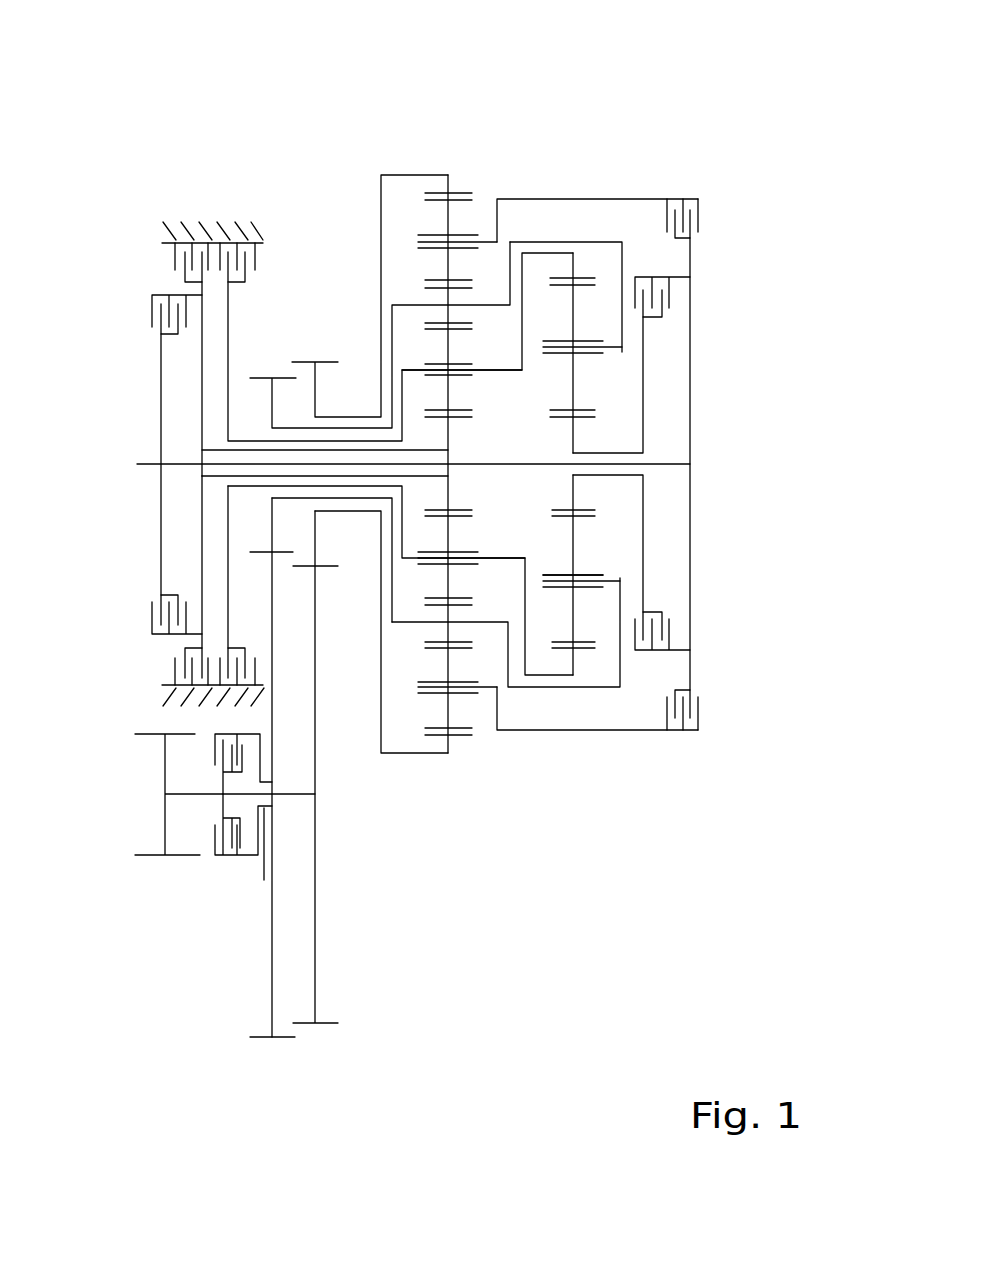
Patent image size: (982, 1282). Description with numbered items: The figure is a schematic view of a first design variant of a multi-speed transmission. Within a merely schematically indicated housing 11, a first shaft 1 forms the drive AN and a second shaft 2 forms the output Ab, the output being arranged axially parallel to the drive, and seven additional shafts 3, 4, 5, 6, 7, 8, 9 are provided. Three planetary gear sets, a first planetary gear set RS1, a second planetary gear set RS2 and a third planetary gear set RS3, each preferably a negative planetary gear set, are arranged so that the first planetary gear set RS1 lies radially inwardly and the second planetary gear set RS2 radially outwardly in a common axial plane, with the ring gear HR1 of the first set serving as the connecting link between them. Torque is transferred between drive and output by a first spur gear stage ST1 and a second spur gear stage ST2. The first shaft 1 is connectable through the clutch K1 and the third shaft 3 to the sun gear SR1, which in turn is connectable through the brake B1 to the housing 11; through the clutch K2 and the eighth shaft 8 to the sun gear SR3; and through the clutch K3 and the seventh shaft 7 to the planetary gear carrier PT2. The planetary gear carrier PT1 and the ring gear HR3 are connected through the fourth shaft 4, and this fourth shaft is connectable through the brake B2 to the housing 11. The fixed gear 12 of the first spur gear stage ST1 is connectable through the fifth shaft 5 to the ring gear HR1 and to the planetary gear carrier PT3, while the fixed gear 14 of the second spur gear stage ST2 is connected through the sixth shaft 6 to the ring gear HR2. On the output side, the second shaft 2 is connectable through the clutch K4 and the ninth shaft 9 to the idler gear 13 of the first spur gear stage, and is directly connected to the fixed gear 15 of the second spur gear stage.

The drive AN is at (138, 463).
The output Ab is at (165, 780).
The first shaft 1 is at (160, 467).
The second shaft 2 is at (188, 795).
The third shaft 3 is at (250, 553).
The fourth shaft 4 is at (262, 440).
The fifth shaft 5 is at (152, 600).
The sixth shaft 6 is at (185, 647).
The seventh shaft 7 is at (578, 245).
The eighth shaft 8 is at (570, 388).
The ninth shaft 9 is at (262, 866).
The housing 11 is at (170, 222).
The fixed gear 12 is at (258, 377).
The idler gear 13 is at (293, 1038).
The fixed gear 14 is at (336, 365).
The fixed gear 15 is at (340, 1024).
The fifth shifting element B1 is at (175, 262).
The sixth shifting element B2 is at (262, 240).
The first shifting element K1 is at (146, 304).
The second shifting element K2 is at (674, 267).
The third shifting element K3 is at (684, 188).
The fourth shifting element K4 is at (228, 872).
The first spur gear stage ST1 is at (272, 372).
The second spur gear stage ST2 is at (315, 356).
The first planetary gear set RS1 is at (388, 173).
The second planetary gear set RS2 is at (448, 168).
The third planetary gear set RS3 is at (573, 226).
The planetary gear carrier PT1 is at (408, 351).
The planetary gear carrier PT2 is at (474, 215).
The planetary gear carrier PT3 is at (616, 336).
The ring gear HR1 is at (432, 350).
The ring gear HR2 is at (419, 343).
The ring gear HR3 is at (598, 278).
The sun gear SR1 is at (580, 490).
The sun gear SR3 is at (453, 437).